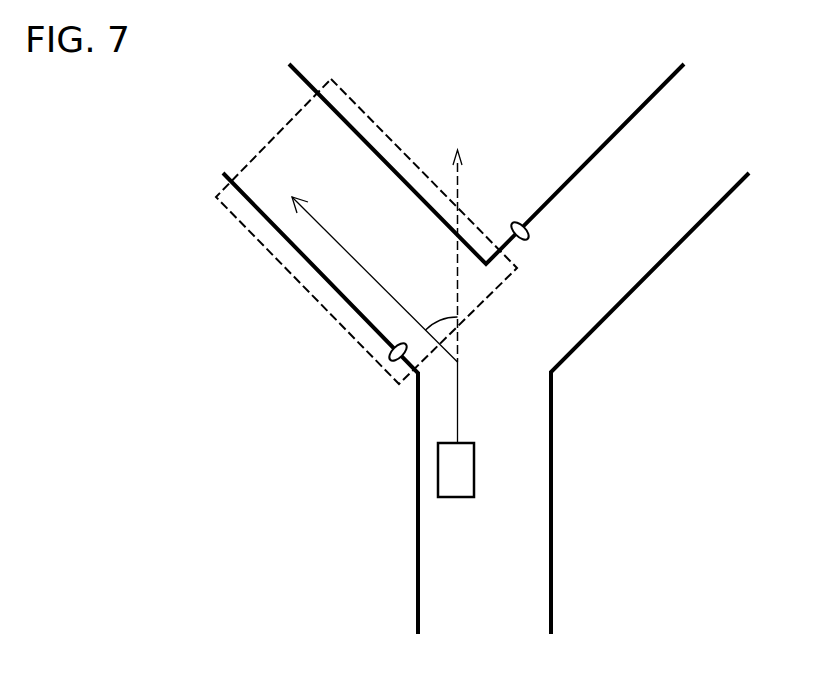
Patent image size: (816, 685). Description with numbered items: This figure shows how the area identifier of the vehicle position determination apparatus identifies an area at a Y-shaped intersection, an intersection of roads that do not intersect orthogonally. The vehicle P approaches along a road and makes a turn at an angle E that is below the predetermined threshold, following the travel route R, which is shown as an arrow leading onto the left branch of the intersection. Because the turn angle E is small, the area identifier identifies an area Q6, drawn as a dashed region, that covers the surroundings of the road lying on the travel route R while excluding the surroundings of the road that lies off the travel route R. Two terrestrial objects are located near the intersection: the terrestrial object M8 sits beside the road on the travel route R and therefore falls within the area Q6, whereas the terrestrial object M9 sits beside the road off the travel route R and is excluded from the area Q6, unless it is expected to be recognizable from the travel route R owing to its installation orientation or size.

The area Q6 is at (386, 132).
The terrestrial object M8 is at (387, 352).
The terrestrial object M9 is at (519, 222).
The travel route R is at (352, 258).
The angle E is at (441, 311).
The vehicle P is at (475, 468).